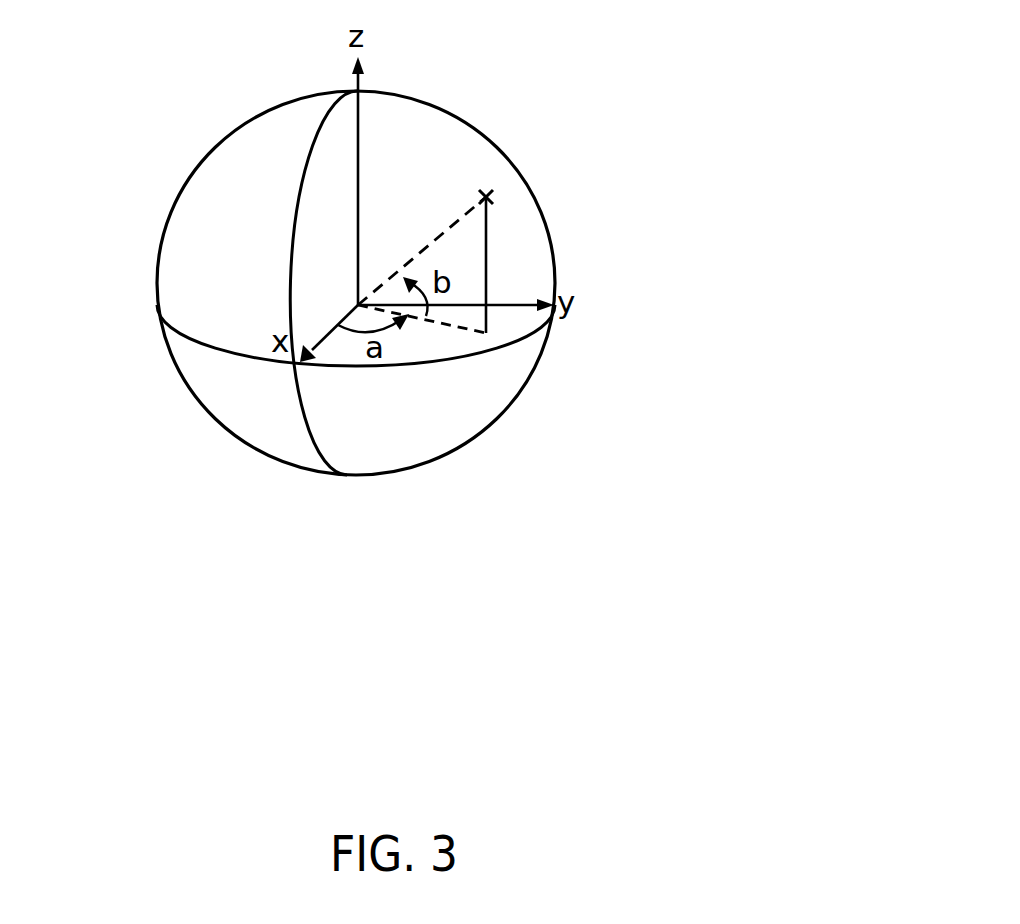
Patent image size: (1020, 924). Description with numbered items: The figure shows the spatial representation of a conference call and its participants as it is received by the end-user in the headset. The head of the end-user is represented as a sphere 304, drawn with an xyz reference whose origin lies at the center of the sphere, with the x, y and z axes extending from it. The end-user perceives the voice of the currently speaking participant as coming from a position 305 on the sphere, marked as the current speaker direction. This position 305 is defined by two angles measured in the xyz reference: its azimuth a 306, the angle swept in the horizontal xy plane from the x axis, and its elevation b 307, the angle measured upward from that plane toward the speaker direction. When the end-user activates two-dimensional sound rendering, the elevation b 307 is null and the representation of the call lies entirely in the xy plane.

The sphere 304 is at (157, 283).
The position 305 is at (492, 197).
The azimuth a 306 is at (377, 378).
The elevation b 307 is at (490, 308).